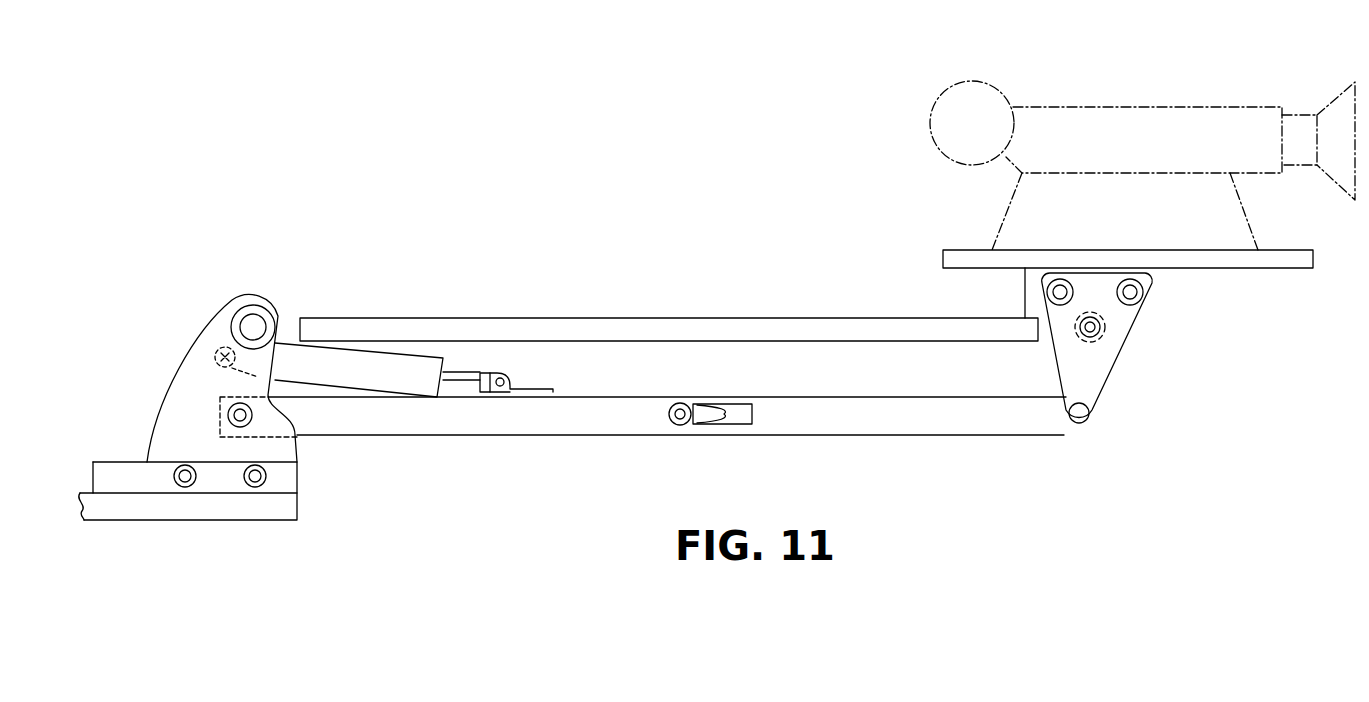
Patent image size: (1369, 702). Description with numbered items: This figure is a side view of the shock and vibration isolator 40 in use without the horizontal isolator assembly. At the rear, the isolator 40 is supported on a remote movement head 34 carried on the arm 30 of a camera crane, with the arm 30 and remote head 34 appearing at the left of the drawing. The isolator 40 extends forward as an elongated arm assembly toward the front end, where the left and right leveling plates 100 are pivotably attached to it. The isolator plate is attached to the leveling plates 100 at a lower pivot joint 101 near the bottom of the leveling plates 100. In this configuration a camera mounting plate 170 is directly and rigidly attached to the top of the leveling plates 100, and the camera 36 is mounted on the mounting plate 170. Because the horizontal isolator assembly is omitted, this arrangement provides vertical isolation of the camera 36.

The arm 30 is at (222, 431).
The remote movement head 34 is at (197, 513).
The camera 36 is at (1102, 130).
The shock and vibration isolator 40 is at (602, 305).
The leveling plates 100 is at (1075, 376).
The lower pivot joint 101 is at (1081, 410).
The camera mounting plate 170 is at (977, 250).